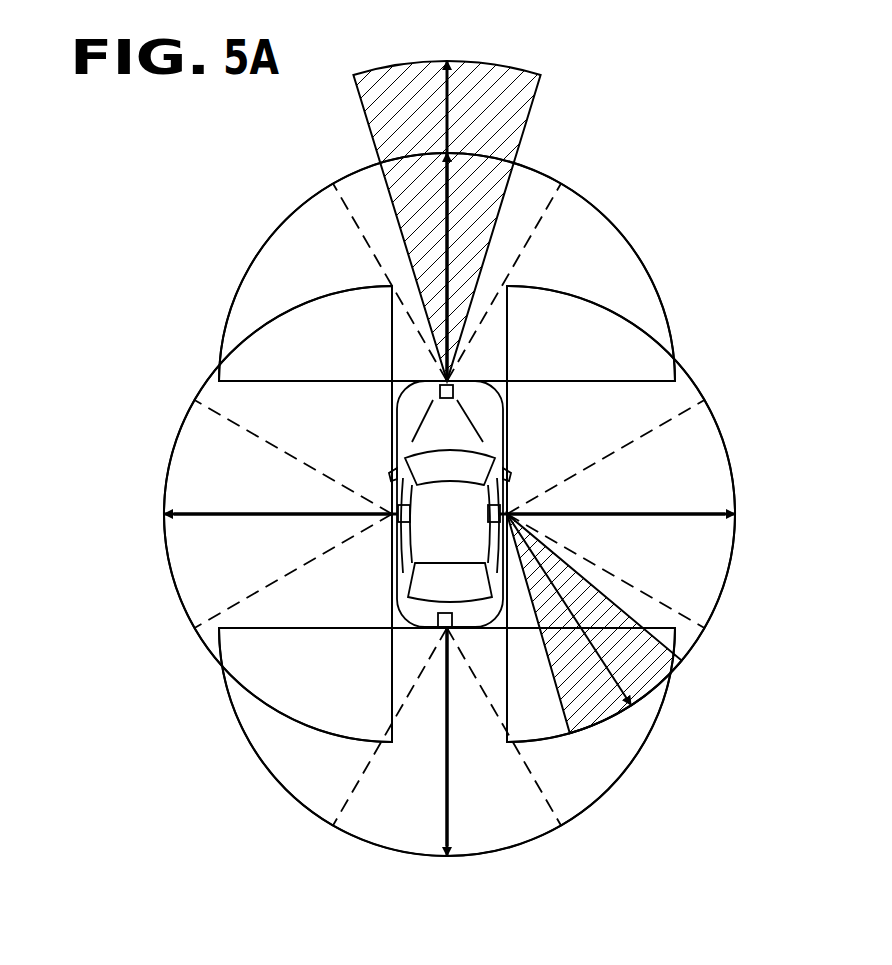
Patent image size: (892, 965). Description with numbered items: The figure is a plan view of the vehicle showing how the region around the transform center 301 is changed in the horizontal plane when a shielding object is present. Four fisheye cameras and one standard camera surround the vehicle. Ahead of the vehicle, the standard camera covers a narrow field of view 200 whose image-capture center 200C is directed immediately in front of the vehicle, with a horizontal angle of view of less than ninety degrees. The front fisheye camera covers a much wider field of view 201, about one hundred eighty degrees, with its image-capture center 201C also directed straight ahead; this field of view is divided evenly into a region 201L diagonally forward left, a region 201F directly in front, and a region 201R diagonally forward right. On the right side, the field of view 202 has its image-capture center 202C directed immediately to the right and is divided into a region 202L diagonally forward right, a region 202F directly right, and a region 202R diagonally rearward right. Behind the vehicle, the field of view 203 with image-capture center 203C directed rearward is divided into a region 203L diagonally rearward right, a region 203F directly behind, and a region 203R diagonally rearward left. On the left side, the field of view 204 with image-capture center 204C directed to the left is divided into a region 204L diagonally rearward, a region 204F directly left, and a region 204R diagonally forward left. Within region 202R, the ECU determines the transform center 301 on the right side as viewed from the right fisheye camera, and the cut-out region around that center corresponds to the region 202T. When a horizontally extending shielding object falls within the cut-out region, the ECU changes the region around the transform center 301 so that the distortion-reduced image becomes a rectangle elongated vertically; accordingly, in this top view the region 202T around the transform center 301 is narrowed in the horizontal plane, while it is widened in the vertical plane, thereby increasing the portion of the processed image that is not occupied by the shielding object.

The field of view 200 is at (543, 80).
The image-capture center 200C is at (455, 70).
The field of view 201 is at (645, 268).
The image-capture center 201C is at (443, 190).
The region 201F is at (527, 190).
The region 201L is at (310, 243).
The region 201R is at (595, 245).
The field of view 202 is at (728, 548).
The image-capture center 202C is at (703, 510).
The region 202F is at (697, 590).
The region 202L is at (623, 420).
The region 202R is at (678, 624).
The region 202T is at (580, 690).
The field of view 203 is at (632, 757).
The image-capture center 203C is at (453, 818).
The region 203F is at (390, 822).
The region 203L is at (587, 775).
The region 203R is at (303, 763).
The field of view 204 is at (177, 583).
The image-capture center 204C is at (200, 518).
The region 204F is at (207, 467).
The region 204L is at (300, 603).
The region 204R is at (260, 413).
The transform center 301 is at (612, 655).